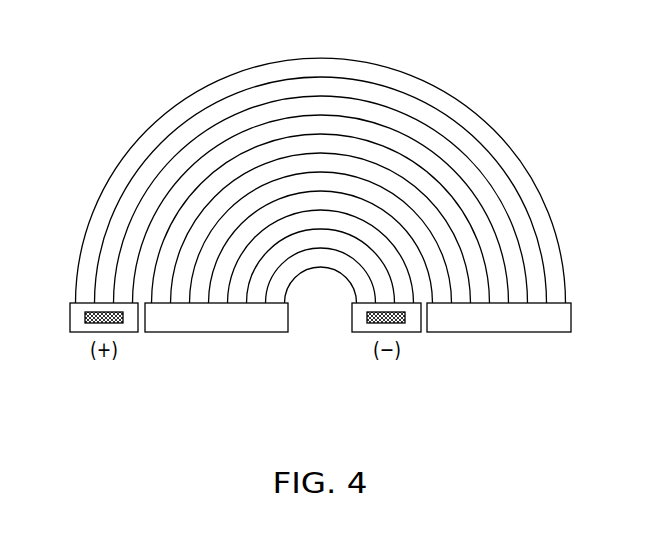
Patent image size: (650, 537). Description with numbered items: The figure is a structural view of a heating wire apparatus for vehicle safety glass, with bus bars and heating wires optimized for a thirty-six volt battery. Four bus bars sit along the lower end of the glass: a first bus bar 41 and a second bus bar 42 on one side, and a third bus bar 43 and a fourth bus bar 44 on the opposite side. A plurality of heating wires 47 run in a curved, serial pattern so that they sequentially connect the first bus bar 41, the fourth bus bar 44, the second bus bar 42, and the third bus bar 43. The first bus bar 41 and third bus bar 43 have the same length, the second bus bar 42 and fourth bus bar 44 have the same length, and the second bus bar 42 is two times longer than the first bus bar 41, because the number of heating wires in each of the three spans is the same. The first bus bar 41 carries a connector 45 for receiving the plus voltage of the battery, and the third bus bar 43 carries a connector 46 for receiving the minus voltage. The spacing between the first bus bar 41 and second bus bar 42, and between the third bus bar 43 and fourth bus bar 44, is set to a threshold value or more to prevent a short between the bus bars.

The first bus bar 41 is at (128, 333).
The second bus bar 42 is at (216, 333).
The third bus bar 43 is at (409, 333).
The fourth bus bar 44 is at (497, 333).
The connector 45 is at (85, 317).
The connector 46 is at (367, 317).
The heating wires 47 is at (319, 58).